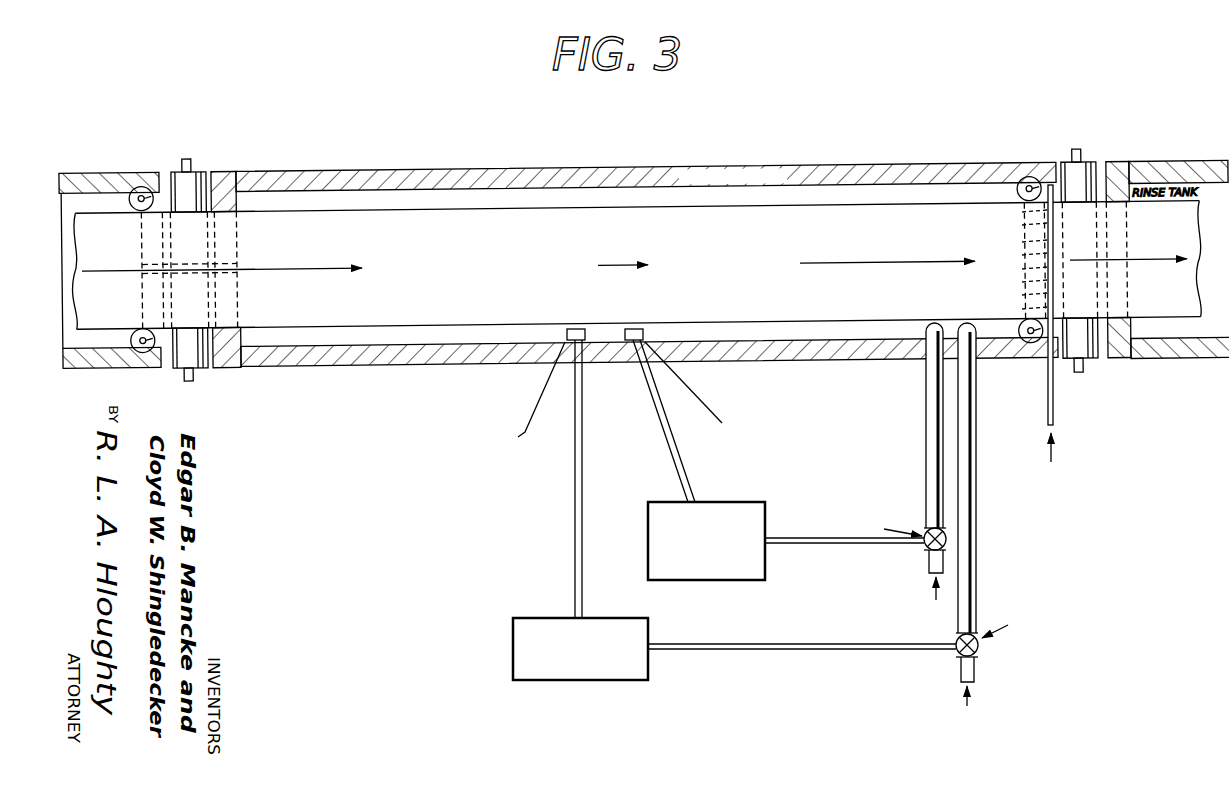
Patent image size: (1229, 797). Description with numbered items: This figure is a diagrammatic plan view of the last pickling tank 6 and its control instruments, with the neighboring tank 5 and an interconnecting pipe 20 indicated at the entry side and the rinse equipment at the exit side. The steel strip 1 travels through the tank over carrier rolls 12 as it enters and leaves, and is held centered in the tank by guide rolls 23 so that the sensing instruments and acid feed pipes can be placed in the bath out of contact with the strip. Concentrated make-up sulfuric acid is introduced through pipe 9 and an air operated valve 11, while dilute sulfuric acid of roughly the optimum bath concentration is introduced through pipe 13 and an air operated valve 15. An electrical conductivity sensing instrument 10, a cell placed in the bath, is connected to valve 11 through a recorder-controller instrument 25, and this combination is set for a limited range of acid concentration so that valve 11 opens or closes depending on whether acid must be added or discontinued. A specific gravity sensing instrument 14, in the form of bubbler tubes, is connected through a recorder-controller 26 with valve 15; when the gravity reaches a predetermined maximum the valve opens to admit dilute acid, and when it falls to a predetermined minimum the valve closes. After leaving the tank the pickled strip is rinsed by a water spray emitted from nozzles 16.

The tank 5 is at (76, 178).
The tank 6 is at (593, 173).
The guide rolls 23 is at (131, 195).
The carrier rolls 12 is at (207, 178).
The pipe 20 is at (229, 272).
The steel strip 1 is at (634, 255).
The nozzles 16 is at (1046, 265).
The electrical conductivity sensing instrument 10 is at (563, 337).
The specific gravity sensing instrument 14 is at (648, 337).
The pipe 13 is at (926, 451).
The pipe 9 is at (977, 440).
The valve 15 is at (926, 550).
The valve 11 is at (981, 654).
The recorder-controller instrument 25 is at (513, 639).
The recorder-controller 26 is at (648, 541).